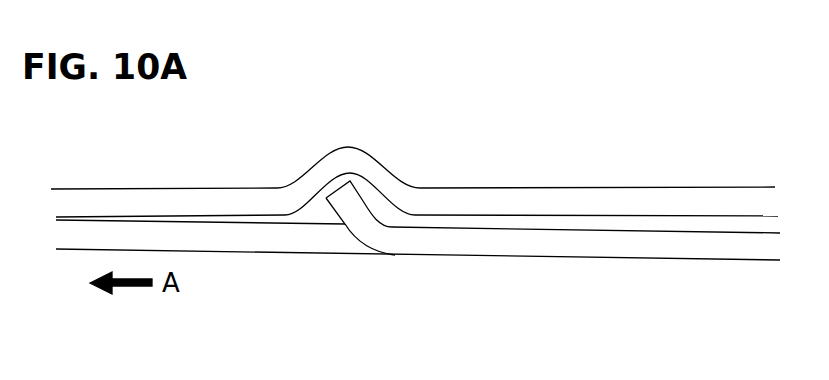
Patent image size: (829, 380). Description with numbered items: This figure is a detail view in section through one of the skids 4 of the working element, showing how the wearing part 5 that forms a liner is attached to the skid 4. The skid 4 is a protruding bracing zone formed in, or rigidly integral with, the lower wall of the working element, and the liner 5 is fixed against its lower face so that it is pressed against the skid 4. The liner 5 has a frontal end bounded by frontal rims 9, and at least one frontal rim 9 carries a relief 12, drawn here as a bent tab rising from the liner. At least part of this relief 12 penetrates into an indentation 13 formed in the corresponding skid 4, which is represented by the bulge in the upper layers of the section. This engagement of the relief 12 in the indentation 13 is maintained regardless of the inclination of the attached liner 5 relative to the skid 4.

The skid 4 is at (620, 208).
The indentation 13 is at (356, 158).
The relief 12 is at (418, 162).
The frontal rim 9 is at (355, 208).
The wearing part 5 is at (652, 248).